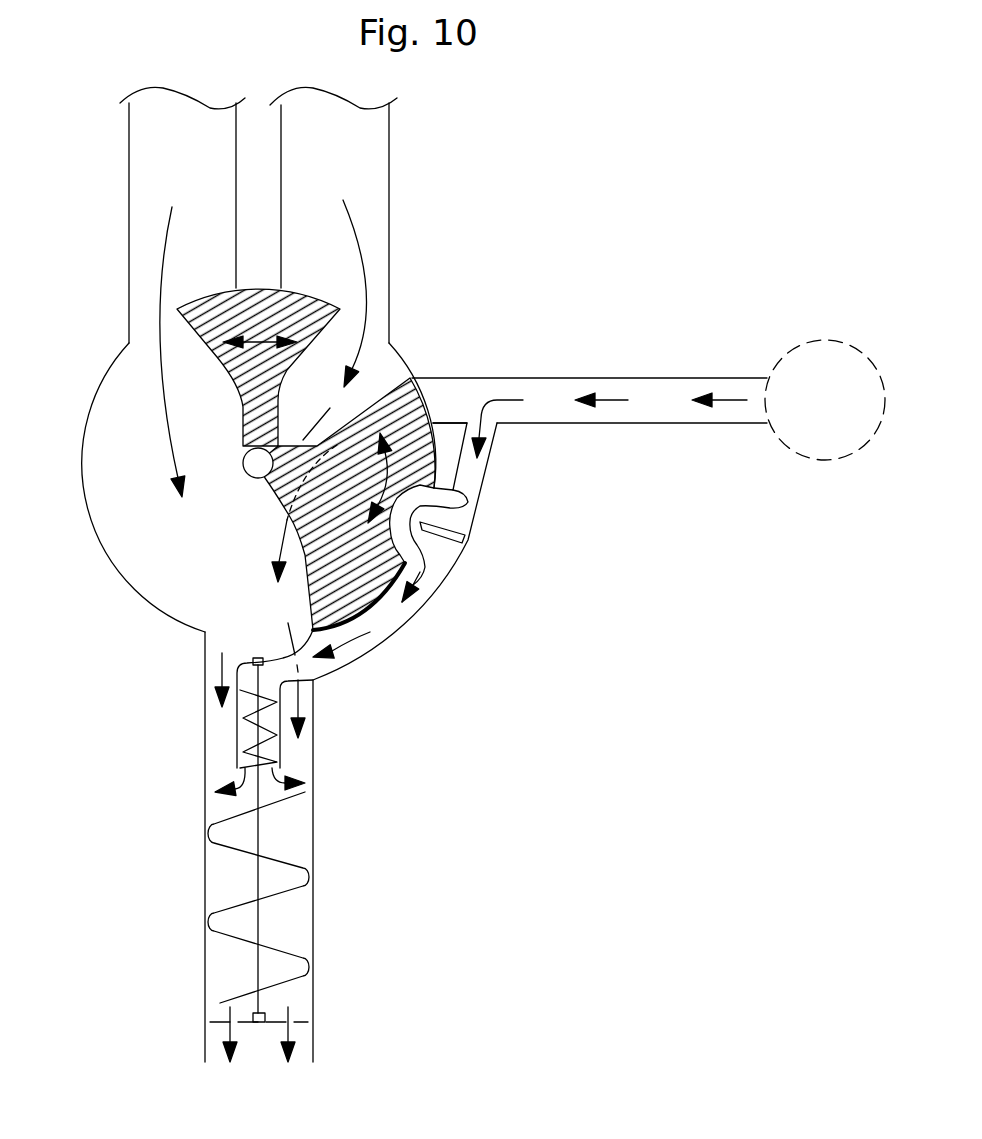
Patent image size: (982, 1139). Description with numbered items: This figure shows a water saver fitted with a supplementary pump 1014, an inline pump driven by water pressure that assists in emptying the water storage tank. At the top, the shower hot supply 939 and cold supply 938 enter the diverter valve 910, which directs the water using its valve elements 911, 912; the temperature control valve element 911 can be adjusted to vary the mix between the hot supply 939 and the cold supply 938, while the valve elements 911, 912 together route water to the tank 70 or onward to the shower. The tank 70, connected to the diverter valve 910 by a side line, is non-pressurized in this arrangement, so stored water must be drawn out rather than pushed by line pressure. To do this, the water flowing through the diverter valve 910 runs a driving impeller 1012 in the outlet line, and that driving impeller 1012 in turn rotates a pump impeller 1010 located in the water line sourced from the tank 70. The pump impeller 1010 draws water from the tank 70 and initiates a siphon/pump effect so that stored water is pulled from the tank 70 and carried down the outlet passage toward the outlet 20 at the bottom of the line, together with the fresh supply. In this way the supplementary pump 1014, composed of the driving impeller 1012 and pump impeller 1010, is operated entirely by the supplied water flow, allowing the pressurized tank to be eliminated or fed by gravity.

The hot supply 939 is at (140, 158).
The cold supply 938 is at (385, 158).
The valve element 911 is at (274, 321).
The valve element 912 is at (366, 586).
The diverter valve 910 is at (120, 572).
The tank 70 is at (839, 409).
The pump impeller 1010 is at (252, 723).
The driving impeller 1012 is at (283, 862).
The supplementary pump 1014 is at (206, 877).
The outlet 20 is at (314, 1040).